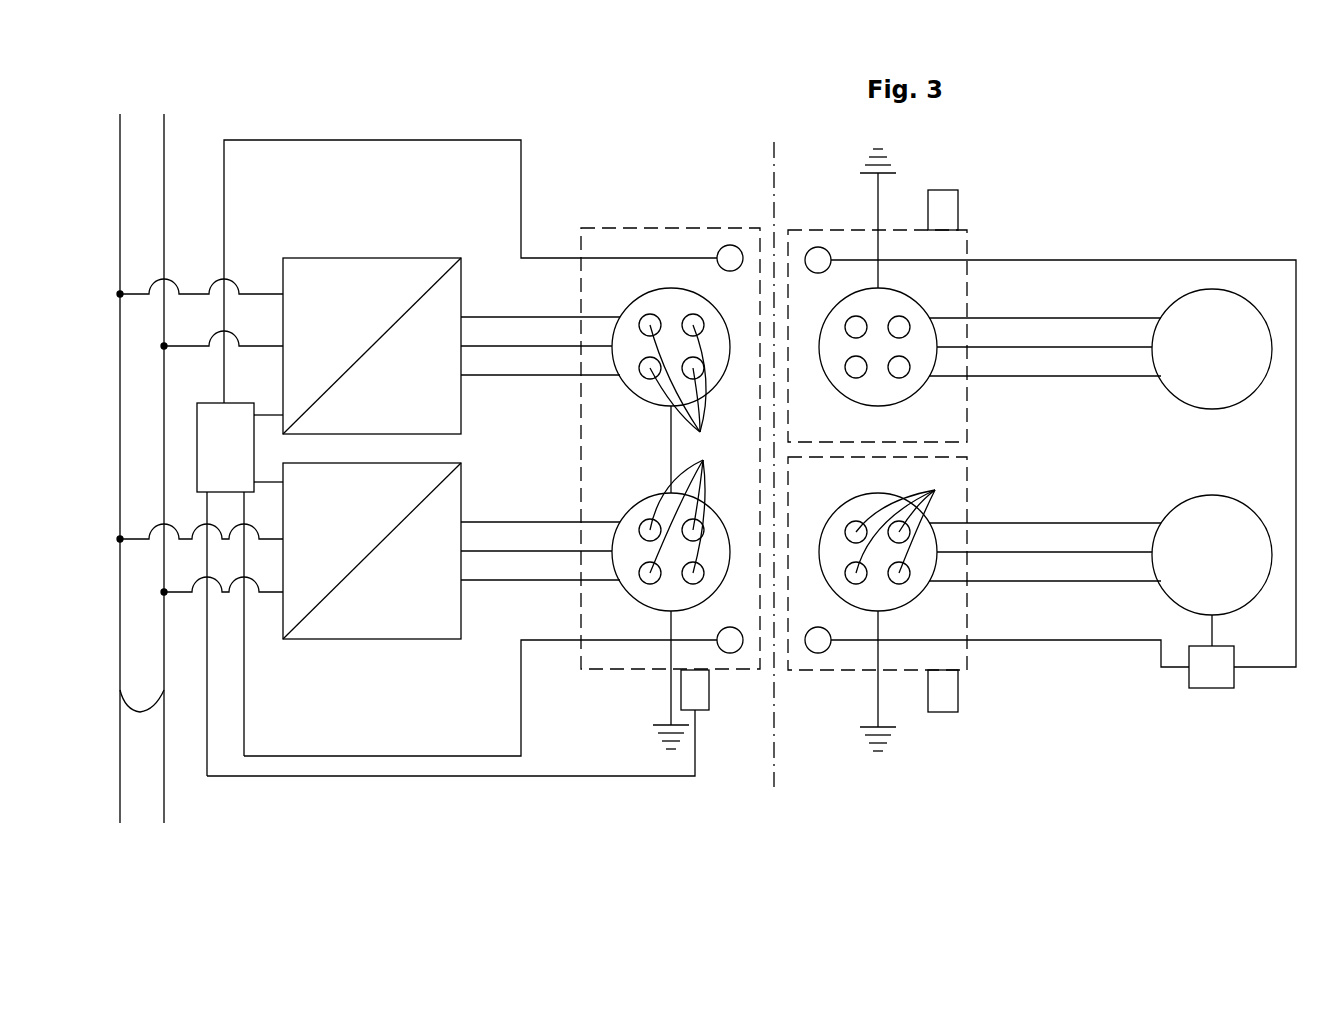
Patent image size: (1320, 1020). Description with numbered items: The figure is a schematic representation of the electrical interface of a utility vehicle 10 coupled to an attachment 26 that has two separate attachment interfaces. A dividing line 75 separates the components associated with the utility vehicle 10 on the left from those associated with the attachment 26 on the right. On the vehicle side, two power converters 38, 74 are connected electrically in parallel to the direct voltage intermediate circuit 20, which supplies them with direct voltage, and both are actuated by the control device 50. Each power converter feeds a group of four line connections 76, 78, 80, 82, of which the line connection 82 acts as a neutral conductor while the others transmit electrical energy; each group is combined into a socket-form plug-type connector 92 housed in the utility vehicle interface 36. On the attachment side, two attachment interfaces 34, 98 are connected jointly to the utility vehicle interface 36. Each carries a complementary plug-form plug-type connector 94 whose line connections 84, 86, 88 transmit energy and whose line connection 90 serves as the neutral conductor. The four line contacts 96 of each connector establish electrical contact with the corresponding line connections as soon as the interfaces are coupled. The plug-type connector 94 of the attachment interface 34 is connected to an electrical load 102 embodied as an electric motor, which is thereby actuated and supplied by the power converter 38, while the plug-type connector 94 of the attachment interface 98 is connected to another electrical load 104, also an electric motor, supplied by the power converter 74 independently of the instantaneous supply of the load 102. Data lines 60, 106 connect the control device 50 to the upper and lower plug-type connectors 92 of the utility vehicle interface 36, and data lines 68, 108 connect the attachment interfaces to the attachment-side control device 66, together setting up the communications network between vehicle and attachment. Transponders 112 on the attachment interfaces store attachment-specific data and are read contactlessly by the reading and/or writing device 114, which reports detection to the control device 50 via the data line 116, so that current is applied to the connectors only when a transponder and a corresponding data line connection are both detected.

The utility vehicle 10 is at (573, 174).
The direct voltage intermediate circuit 20 is at (142, 468).
The attachment 26 is at (901, 161).
The attachment interface 34 is at (825, 230).
The utility vehicle interface 36 is at (645, 228).
The power converter 38 is at (290, 346).
The control device 50 is at (240, 589).
The data line 60 is at (273, 140).
The control device 66 is at (1211, 651).
The data line 68 is at (1032, 259).
The power converter 74 is at (290, 551).
The dividing line 75 is at (773, 182).
The line connection 76 is at (512, 317).
The line connection 78 is at (525, 346).
The line connection 80 is at (515, 376).
The line connection 82 is at (670, 452).
The line connection 84 is at (1045, 318).
The line connection 86 is at (1045, 347).
The line connection 88 is at (1045, 376).
The line connection 90 is at (877, 215).
The plug-type connector 92 is at (655, 293).
The plug-type connector 94 is at (832, 388).
The line contacts 96 is at (795, 449).
The attachment interface 98 is at (967, 490).
The electrical load 102 is at (1212, 349).
The electrical load 104 is at (1212, 555).
The data line 106 is at (340, 755).
The data line 108 is at (1027, 642).
The transponder 112 is at (942, 195).
The reading and/or writing device 114 is at (710, 695).
The data line 116 is at (358, 778).